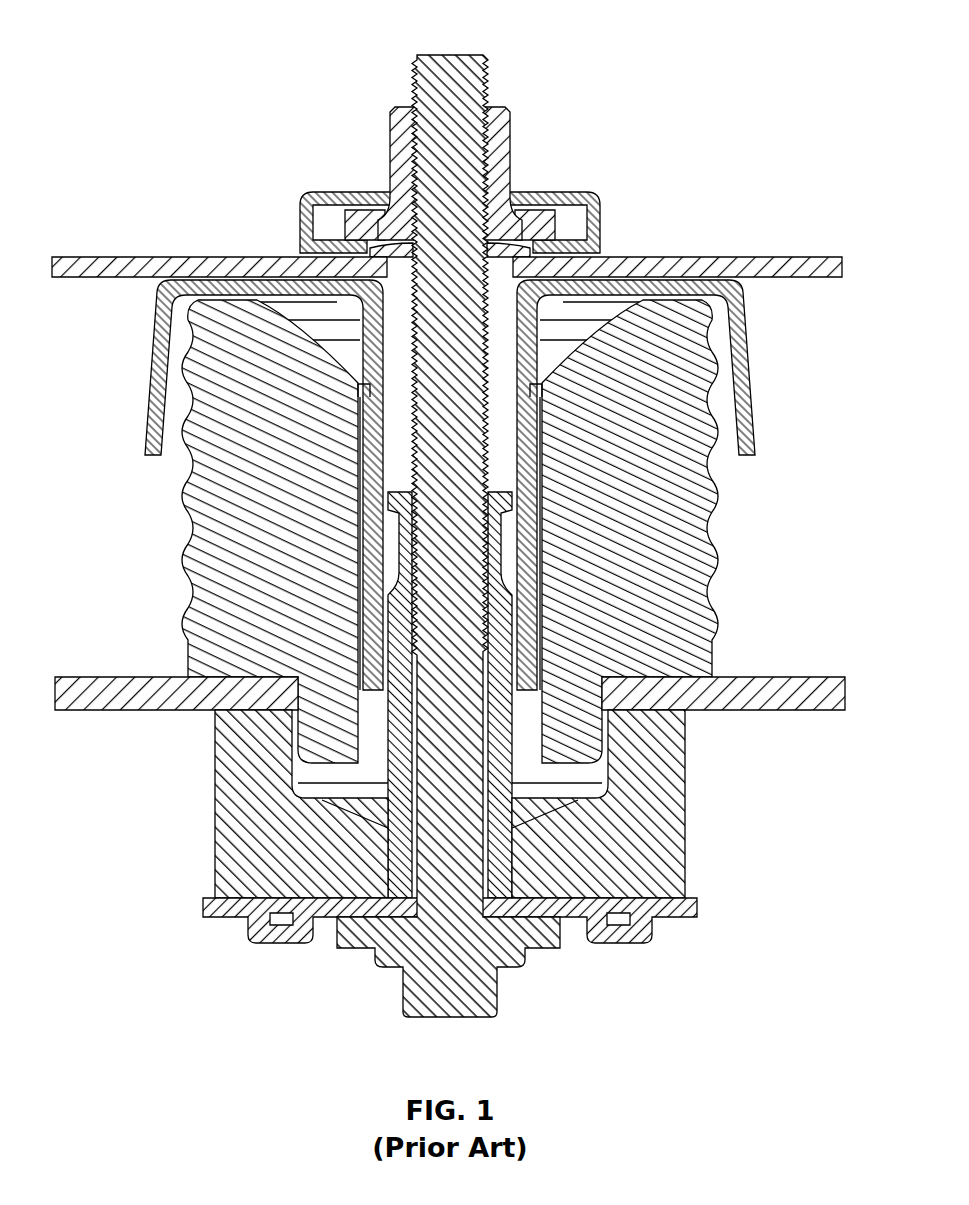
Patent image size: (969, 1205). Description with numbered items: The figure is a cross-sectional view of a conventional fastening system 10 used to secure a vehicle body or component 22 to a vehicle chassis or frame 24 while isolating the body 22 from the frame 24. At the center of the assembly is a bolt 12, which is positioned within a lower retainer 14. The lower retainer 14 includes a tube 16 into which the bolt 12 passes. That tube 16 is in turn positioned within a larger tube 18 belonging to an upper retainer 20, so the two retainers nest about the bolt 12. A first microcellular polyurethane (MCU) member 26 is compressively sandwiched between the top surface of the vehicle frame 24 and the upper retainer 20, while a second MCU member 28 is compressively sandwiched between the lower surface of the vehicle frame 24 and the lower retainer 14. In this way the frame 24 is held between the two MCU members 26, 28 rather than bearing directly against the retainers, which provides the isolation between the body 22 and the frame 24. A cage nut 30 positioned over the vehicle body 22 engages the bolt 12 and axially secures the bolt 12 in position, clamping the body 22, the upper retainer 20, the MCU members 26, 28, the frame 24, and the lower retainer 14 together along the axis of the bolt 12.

The fastening system 10 is at (443, 514).
The bolt 12 is at (473, 83).
The lower retainer 14 is at (220, 919).
The tube 16 is at (502, 622).
The larger tube 18 is at (525, 555).
The upper retainer 20 is at (106, 280).
The vehicle body or component 22 is at (795, 258).
The vehicle chassis or frame 24 is at (93, 675).
The first microcellular polyurethane (MCU) member 26 is at (190, 542).
The second MCU member 28 is at (214, 803).
The cage nut 30 is at (511, 157).